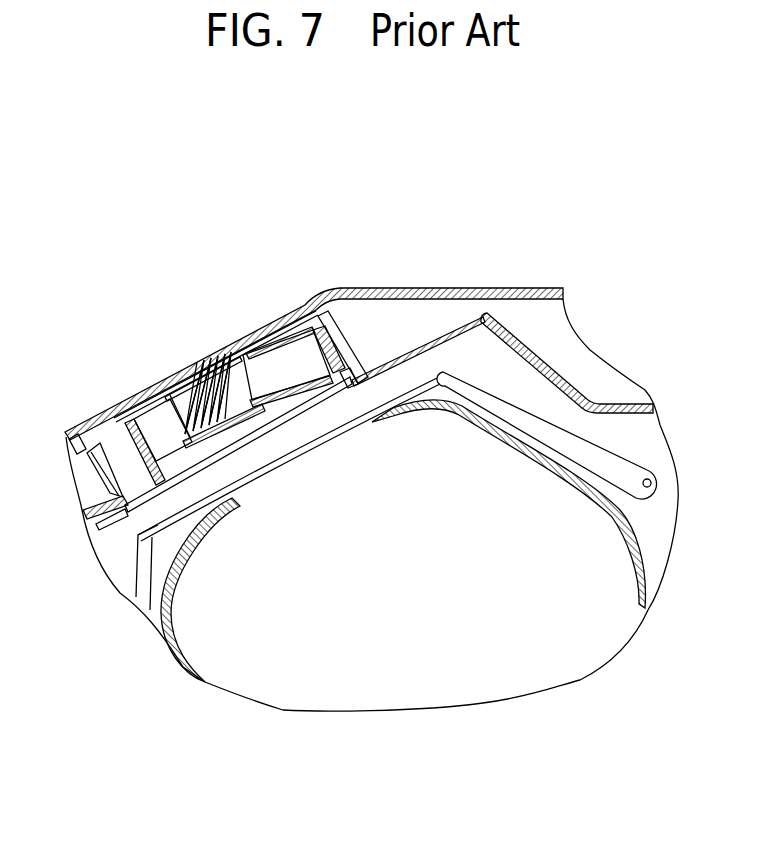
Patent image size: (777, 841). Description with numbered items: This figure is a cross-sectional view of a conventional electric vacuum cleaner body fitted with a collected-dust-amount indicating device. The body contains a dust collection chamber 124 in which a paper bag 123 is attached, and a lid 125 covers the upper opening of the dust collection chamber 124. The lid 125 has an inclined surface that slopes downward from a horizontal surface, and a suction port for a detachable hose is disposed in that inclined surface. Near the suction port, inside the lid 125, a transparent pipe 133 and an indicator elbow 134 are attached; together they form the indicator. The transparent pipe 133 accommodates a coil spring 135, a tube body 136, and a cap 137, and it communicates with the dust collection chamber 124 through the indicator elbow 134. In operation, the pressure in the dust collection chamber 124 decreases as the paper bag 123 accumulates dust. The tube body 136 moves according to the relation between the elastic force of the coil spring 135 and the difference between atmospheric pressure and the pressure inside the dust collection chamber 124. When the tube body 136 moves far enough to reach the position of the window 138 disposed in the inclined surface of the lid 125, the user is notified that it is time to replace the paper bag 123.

The paper bag 123 is at (278, 648).
The dust collection chamber 124 is at (655, 525).
The lid 125 is at (433, 288).
The transparent pipe 133 is at (213, 360).
The indicator elbow 134 is at (110, 410).
The coil spring 135 is at (150, 380).
The tube body 136 is at (267, 318).
The cap 137 is at (318, 288).
The window 138 is at (183, 350).